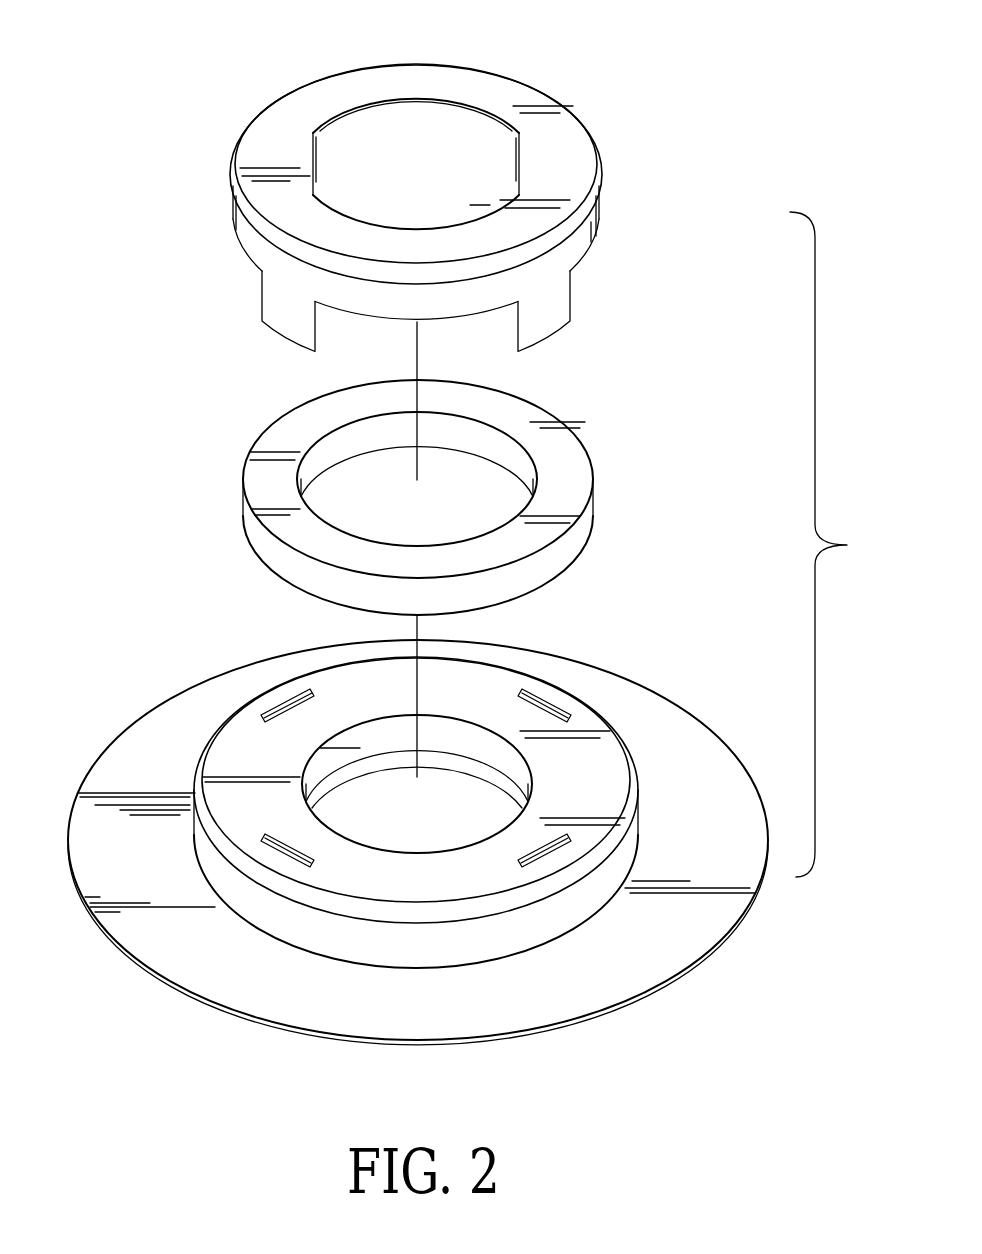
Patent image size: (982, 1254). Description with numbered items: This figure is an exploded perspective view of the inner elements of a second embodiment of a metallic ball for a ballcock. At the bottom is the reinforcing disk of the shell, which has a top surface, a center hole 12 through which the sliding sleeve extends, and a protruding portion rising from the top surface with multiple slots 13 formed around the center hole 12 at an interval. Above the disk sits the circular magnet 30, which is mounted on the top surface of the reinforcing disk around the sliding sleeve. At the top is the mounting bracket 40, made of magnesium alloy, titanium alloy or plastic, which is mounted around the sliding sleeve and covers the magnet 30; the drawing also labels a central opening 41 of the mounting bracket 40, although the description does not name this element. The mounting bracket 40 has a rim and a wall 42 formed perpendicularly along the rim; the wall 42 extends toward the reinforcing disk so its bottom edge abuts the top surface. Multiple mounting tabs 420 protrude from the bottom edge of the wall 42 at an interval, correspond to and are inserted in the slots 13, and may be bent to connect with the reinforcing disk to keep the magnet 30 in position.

The center hole 12 is at (459, 802).
The slots 13 is at (551, 703).
The magnet 30 is at (262, 480).
The mounting bracket 40 is at (414, 217).
The central hole of cap 41 is at (503, 128).
The wall 42 is at (594, 233).
The mounting tabs 420 is at (285, 317).